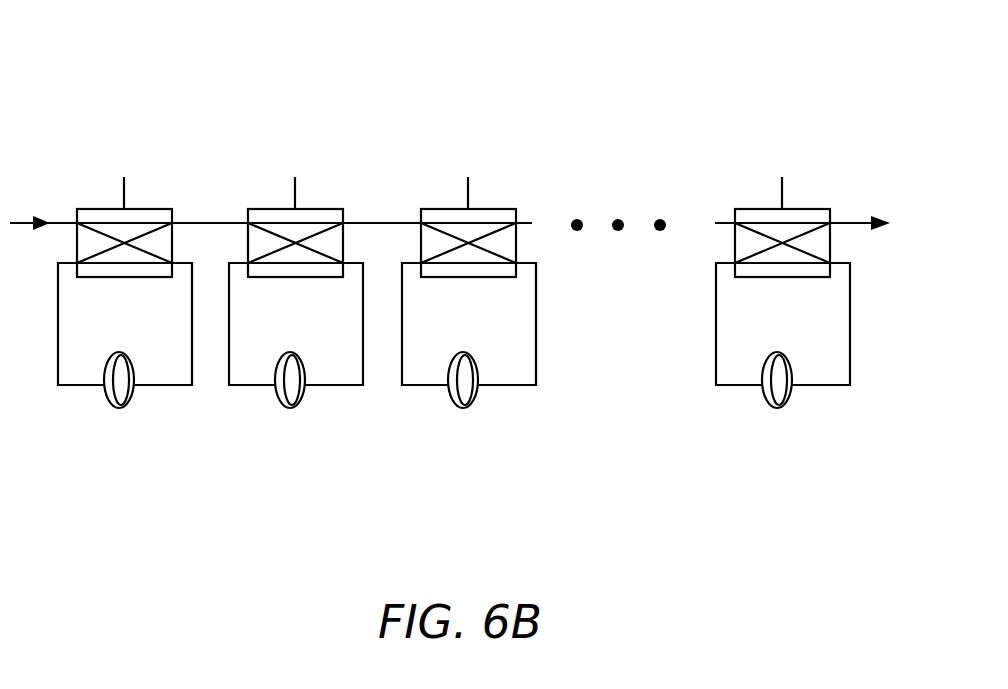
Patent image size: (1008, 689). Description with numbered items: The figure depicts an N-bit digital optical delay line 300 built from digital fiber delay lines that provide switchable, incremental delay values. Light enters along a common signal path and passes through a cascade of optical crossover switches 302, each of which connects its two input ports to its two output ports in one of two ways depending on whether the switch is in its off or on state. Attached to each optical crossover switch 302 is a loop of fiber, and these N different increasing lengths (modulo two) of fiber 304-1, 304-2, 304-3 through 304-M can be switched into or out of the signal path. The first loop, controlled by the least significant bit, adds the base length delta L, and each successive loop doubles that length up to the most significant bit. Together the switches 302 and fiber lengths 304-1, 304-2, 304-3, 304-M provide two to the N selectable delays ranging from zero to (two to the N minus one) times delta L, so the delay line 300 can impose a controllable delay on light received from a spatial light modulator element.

The N-bit digital optical delay line 300 is at (640, 67).
The optical crossover switch 302 is at (500, 213).
The fiber length 304-1 is at (139, 406).
The fiber length 304-2 is at (310, 406).
The fiber length 304-3 is at (483, 406).
The fiber length 304-M is at (800, 406).